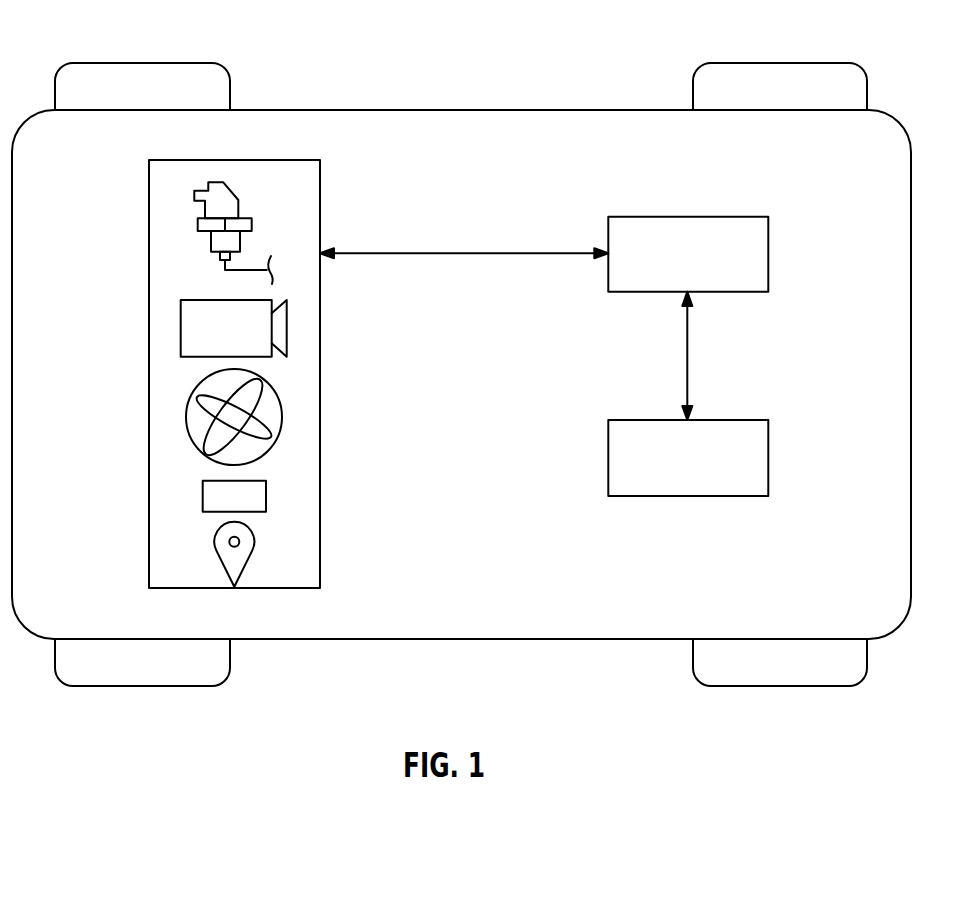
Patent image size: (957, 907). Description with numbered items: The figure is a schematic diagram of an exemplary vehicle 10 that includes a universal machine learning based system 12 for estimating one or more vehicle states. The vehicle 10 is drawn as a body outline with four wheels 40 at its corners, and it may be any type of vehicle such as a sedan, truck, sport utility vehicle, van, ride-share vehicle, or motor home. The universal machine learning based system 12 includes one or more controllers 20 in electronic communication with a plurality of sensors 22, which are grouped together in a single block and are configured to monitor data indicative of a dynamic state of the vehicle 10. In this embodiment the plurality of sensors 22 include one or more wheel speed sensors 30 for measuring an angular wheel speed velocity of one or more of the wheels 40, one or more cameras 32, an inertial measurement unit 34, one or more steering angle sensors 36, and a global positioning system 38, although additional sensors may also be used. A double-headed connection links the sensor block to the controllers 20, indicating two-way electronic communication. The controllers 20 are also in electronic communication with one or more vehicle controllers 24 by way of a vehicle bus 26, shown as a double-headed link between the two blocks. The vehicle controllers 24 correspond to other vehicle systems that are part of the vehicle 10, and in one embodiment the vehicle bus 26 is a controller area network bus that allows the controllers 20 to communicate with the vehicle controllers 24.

The vehicle 10 is at (393, 108).
The universal machine learning based system 12 is at (698, 160).
The controllers 20 is at (702, 267).
The plurality of sensors 22 is at (203, 159).
The vehicle controllers 24 is at (702, 471).
The vehicle bus 26 is at (689, 355).
The wheel speed sensors 30 is at (252, 225).
The cameras 32 is at (288, 327).
The inertial measurement unit 34 is at (282, 422).
The steering angle sensors 36 is at (266, 495).
The global positioning system 38 is at (255, 543).
The wheels 40 is at (113, 62).